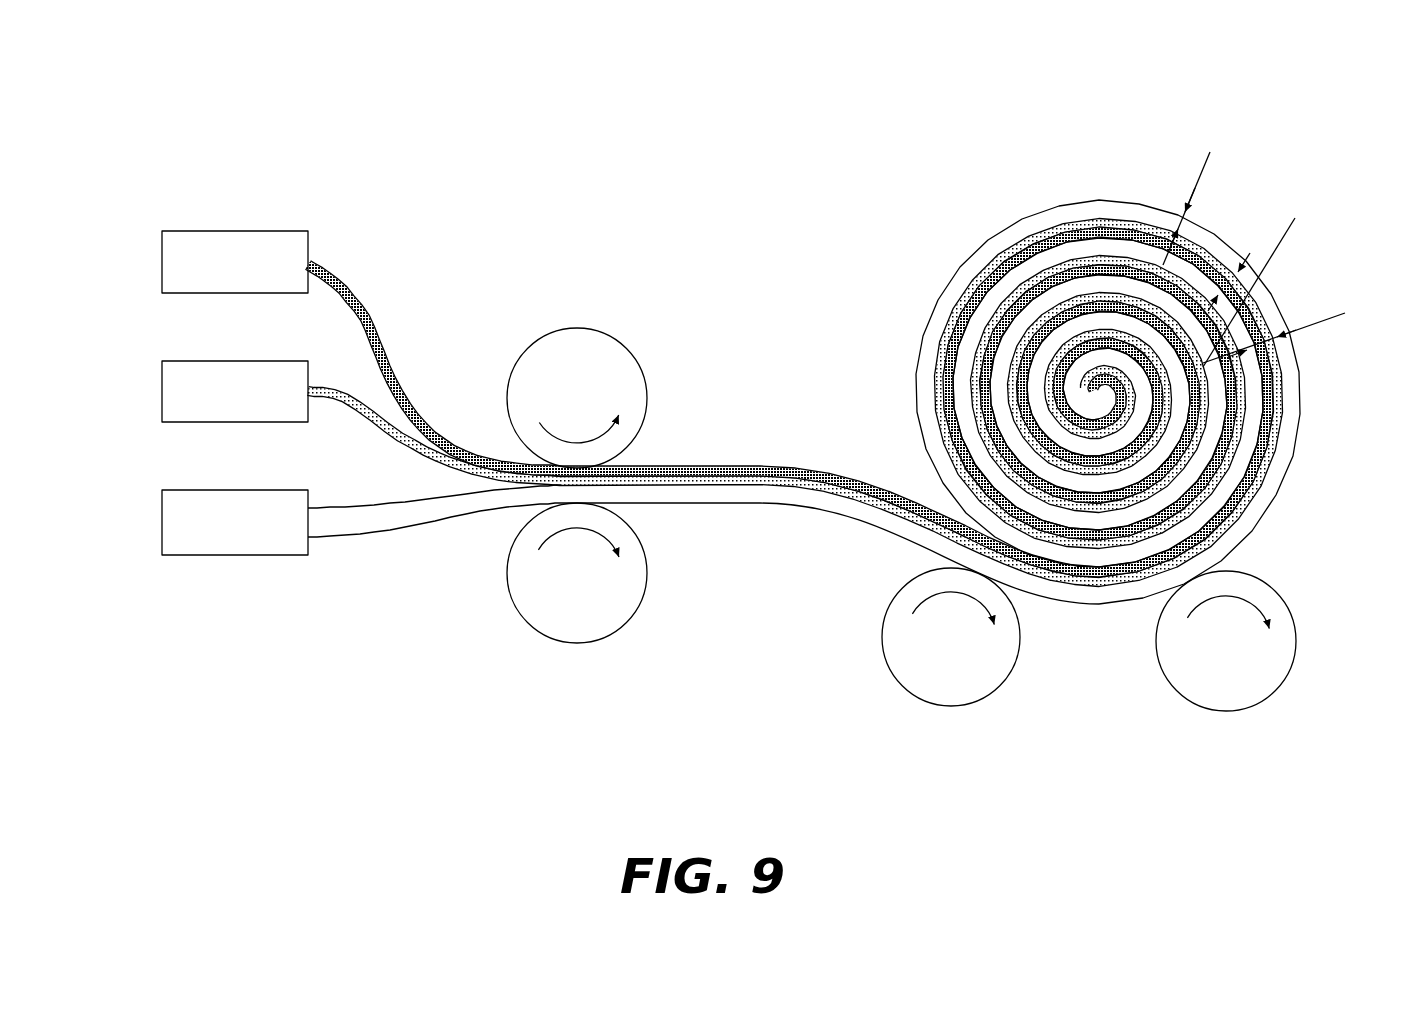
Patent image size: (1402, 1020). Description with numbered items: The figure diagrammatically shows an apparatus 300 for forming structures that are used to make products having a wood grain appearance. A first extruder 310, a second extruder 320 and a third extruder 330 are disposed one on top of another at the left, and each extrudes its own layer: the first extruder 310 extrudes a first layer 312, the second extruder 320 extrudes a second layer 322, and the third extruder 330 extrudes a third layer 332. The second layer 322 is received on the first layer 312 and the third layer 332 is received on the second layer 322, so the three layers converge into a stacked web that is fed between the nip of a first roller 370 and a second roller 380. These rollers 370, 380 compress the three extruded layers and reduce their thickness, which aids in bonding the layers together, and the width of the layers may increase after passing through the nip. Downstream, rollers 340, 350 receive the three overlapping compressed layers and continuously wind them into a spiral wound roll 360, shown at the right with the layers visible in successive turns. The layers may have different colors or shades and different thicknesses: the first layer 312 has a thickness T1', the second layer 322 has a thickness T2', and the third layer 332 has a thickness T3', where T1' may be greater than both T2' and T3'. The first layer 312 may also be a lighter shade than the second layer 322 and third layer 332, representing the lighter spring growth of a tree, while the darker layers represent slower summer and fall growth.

The apparatus 300 is at (290, 92).
The first extruder 310 is at (162, 520).
The first layer 312 is at (360, 525).
The second extruder 320 is at (162, 391).
The second layer 322 is at (363, 423).
The third extruder 330 is at (162, 261).
The third layer 332 is at (357, 308).
The roller 340 is at (884, 636).
The roller 350 is at (1158, 636).
The spiral wound roll 360 is at (1278, 475).
The first roller 370 is at (510, 578).
The second roller 380 is at (510, 366).
The thickness T1' is at (1216, 208).
The thickness T2' is at (1277, 292).
The thickness T3' is at (1301, 338).